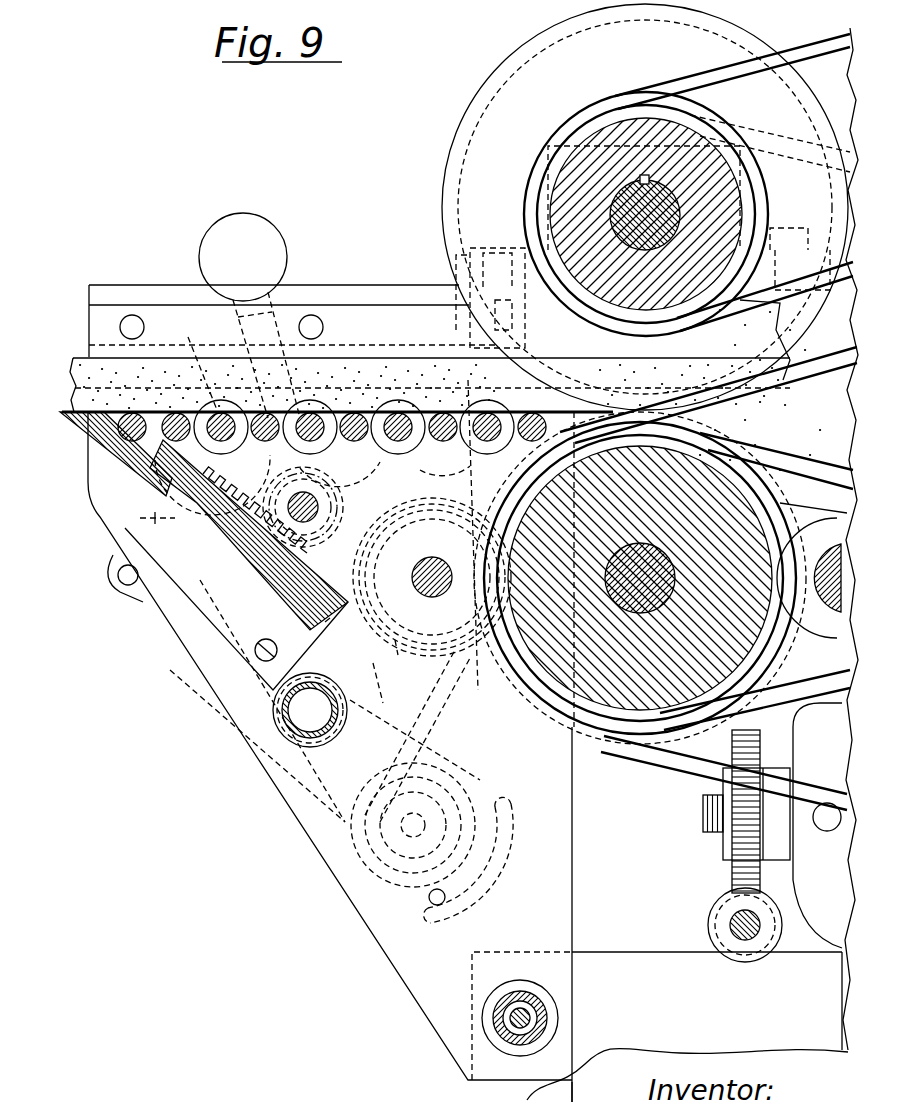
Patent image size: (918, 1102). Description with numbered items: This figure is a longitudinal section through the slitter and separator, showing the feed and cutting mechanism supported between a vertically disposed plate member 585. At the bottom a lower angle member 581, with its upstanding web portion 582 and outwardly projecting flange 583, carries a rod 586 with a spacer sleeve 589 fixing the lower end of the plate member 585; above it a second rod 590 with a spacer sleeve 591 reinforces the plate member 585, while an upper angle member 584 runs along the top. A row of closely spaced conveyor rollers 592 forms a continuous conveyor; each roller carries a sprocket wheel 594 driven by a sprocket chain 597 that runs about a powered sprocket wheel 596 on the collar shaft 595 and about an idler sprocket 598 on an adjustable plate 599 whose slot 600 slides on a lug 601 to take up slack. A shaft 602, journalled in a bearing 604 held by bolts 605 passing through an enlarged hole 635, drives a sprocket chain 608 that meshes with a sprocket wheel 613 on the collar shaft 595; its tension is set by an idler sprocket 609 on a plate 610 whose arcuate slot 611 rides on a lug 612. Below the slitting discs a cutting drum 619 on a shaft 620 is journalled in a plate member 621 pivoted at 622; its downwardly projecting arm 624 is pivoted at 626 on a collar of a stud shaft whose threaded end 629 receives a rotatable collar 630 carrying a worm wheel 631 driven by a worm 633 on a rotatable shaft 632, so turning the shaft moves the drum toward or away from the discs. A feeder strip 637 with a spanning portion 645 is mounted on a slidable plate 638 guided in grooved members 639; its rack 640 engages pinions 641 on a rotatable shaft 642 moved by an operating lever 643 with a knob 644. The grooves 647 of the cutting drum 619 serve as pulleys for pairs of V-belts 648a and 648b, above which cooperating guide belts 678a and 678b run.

The upper angle member 584 is at (148, 293).
The sprocket wheel 594 is at (188, 345).
The operating lever 643 is at (250, 334).
The knob 644 is at (252, 222).
The enlarged hole 635 is at (455, 262).
The bearing 604 is at (550, 194).
The shaft 602 is at (667, 204).
The bolt 605 is at (495, 248).
The guide belt 678a is at (843, 132).
The guide belt 678b is at (797, 50).
The V-belt 648a is at (780, 458).
The V-belt 648b is at (838, 350).
The spanning portion 645 is at (64, 416).
The feeder strip 637 is at (136, 456).
The rack 640 is at (247, 485).
The conveyor roller 592 is at (398, 442).
The rotatable shaft 642 is at (320, 505).
The sprocket wheel 613 is at (440, 510).
The lug 601 is at (140, 517).
The pinion 641 is at (307, 553).
The plate member 621 is at (807, 503).
The pivot 622 is at (821, 556).
The slot 600 is at (125, 586).
The adjustable plate 599 is at (143, 603).
The collar shaft 595 is at (433, 592).
The idler sprocket 598 is at (197, 648).
The slidable plate 638 is at (324, 630).
The cutting drum 619 is at (747, 643).
The grooved member 639 is at (307, 653).
The powered sprocket wheel 596 is at (410, 652).
The sprocket chain 597 is at (380, 677).
The groove 647 is at (530, 660).
The arm 624 is at (838, 727).
The rod 590 is at (317, 717).
The spacer sleeve 591 is at (321, 738).
The sprocket chain 608 is at (422, 713).
The shaft 620 is at (627, 733).
The idler sprocket 609 is at (452, 790).
The plate 610 is at (326, 790).
The rotatable collar 630 is at (722, 787).
The threaded end 629 is at (703, 812).
The arcuate slot 611 is at (493, 850).
The worm wheel 631 is at (733, 867).
The worm 633 is at (717, 900).
The lug 612 is at (441, 902).
The pivot 626 is at (827, 832).
The rotatable shaft 632 is at (733, 923).
The plate member 585 is at (370, 920).
The web portion 582 is at (620, 948).
The angle member 581 is at (724, 1013).
The rod 586 is at (533, 1018).
The spacer sleeve 589 is at (543, 1030).
The flange 583 is at (470, 1100).